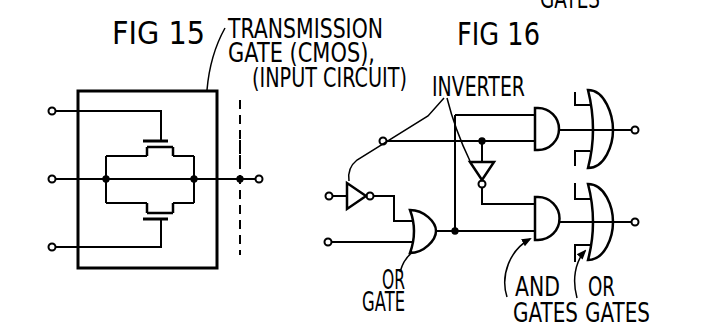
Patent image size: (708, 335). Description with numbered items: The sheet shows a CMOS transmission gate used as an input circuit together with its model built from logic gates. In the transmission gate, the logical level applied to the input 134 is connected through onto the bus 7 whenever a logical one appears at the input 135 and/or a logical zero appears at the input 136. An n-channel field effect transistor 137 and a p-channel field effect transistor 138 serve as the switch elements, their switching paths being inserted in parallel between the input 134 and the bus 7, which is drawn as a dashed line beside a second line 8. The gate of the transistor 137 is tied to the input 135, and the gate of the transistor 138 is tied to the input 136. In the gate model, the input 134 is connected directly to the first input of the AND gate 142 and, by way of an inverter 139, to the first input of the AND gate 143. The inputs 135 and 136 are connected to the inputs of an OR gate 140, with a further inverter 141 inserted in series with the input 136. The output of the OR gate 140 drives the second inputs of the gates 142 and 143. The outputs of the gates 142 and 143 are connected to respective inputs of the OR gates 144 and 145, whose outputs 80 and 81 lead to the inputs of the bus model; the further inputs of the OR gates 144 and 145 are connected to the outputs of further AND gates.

In FIG. 15, the input 134 is at (140, 179).
In FIG. 16, the input 134 is at (452, 126).
In FIG. 15, the input 135 is at (89, 118).
In FIG. 16, the input 135 is at (358, 260).
In FIG. 15, the input 136 is at (89, 241).
In FIG. 16, the input 136 is at (327, 182).
In FIG. 15, the n-channel field effect transistor 137 is at (169, 145).
In FIG. 15, the p-channel field effect transistor 138 is at (169, 219).
In FIG. 15, the bus 7 is at (248, 148).
In FIG. 15, the line 8 is at (250, 200).
In FIG. 16, the inverter 139 is at (502, 172).
In FIG. 16, the OR gate 140 is at (472, 196).
In FIG. 16, the inverter 141 is at (379, 194).
In FIG. 16, the AND gate 142 is at (521, 113).
In FIG. 16, the AND gate 143 is at (555, 237).
In FIG. 16, the OR gate 144 is at (605, 122).
In FIG. 16, the OR gate 145 is at (606, 229).
In FIG. 16, the output 80 is at (647, 132).
In FIG. 16, the output 81 is at (647, 223).